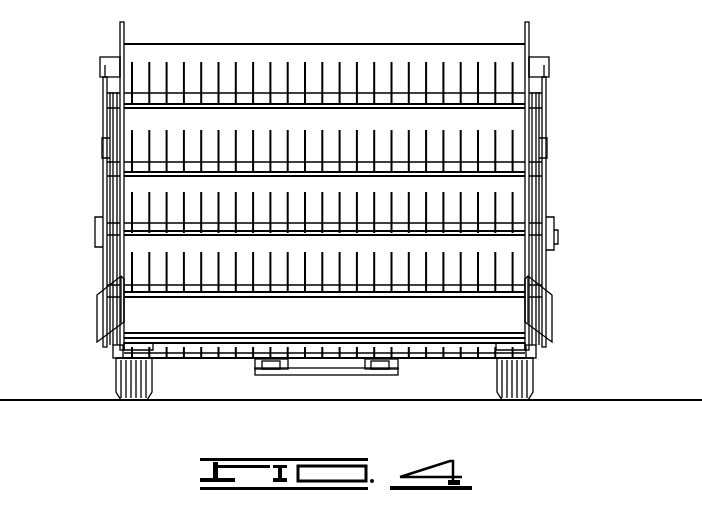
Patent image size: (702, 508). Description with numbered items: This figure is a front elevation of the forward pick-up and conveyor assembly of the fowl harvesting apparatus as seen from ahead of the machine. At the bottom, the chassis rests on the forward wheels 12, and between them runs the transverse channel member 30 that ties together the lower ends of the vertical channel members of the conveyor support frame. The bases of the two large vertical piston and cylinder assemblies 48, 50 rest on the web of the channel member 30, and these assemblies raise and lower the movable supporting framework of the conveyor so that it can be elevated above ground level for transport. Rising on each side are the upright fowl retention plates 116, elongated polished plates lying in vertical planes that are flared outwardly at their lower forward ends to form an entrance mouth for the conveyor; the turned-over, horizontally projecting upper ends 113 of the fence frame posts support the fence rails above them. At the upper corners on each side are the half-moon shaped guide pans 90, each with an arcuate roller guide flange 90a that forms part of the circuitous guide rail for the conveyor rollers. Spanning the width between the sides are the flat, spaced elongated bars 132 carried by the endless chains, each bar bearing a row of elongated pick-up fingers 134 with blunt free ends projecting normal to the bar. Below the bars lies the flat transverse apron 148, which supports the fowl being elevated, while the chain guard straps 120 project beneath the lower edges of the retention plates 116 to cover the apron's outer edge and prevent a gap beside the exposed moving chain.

The forward wheels 12 is at (121, 377).
The transverse channel member 30 is at (314, 378).
The piston and cylinder assembly 48 is at (252, 372).
The piston and cylinder assembly 50 is at (405, 372).
The guide pan 90 is at (100, 63).
The roller guide flange 90a is at (112, 63).
The horizontally projecting upper ends 113 is at (533, 215).
The fowl retention plate 116 is at (125, 31).
The chain guard straps 120 is at (123, 328).
The elongated bars 132 is at (173, 103).
The pick-up fingers 134 is at (410, 68).
The apron 148 is at (332, 52).